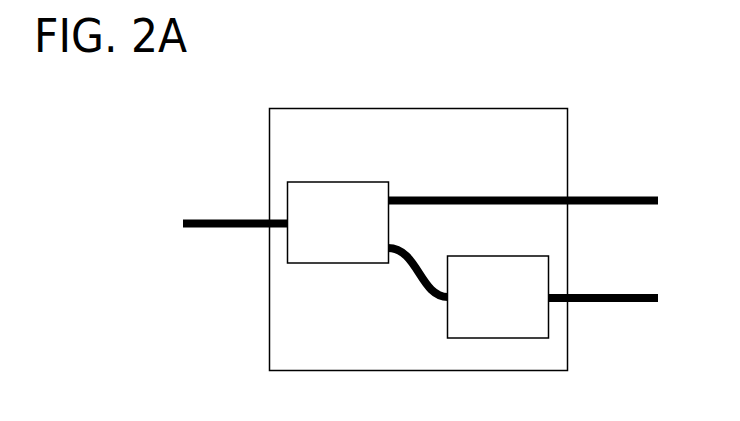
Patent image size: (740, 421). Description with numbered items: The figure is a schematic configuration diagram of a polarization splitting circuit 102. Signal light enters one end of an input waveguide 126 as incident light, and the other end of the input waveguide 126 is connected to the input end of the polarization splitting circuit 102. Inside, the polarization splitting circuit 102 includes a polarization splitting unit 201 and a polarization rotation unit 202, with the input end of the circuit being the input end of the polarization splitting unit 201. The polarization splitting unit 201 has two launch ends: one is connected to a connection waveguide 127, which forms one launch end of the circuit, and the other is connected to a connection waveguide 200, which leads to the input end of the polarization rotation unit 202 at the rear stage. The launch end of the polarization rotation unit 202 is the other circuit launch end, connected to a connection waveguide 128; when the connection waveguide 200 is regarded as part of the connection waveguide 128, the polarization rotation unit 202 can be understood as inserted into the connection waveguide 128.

The polarization splitting circuit 102 is at (305, 108).
The input waveguide 126 is at (219, 218).
The connection waveguide 127 is at (627, 195).
The connection waveguide 128 is at (628, 293).
The connection waveguide 200 is at (417, 277).
The polarization splitting unit 201 is at (362, 238).
The polarization rotation unit 202 is at (522, 312).